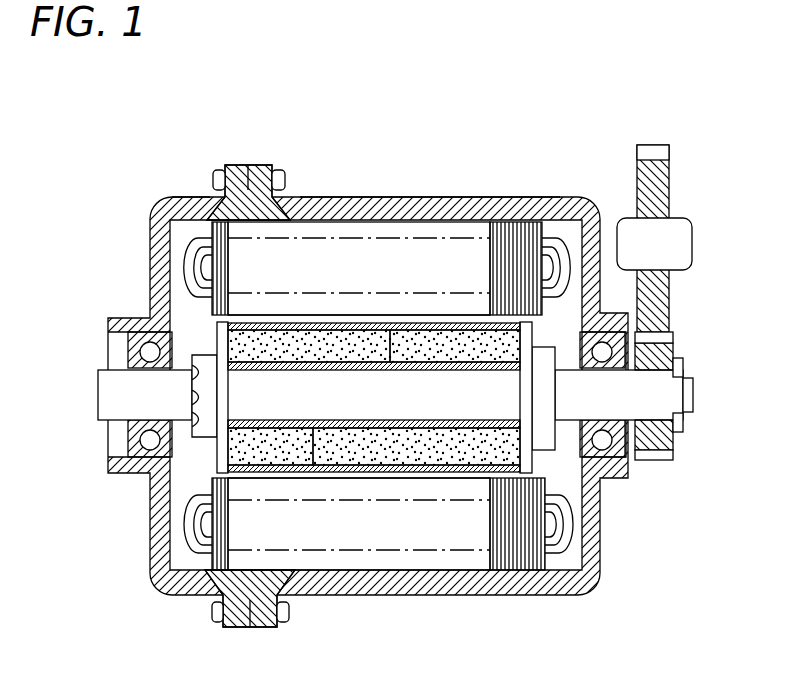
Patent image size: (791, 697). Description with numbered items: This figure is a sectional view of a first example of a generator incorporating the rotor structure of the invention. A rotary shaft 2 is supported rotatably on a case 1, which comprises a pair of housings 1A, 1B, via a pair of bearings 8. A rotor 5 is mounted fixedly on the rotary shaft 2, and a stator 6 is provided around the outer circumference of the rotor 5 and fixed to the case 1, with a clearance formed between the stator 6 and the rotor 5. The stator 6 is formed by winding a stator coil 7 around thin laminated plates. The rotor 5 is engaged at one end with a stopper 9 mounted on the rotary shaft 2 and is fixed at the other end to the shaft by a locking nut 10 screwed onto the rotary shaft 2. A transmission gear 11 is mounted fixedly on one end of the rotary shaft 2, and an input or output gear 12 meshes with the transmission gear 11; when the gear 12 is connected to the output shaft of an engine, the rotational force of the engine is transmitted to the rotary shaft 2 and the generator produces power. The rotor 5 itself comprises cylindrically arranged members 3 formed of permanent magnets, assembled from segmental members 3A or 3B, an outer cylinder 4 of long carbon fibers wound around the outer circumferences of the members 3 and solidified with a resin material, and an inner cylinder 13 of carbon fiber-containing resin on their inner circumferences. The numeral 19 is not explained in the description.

The case 1 is at (384, 194).
The housing 1A is at (440, 205).
The housing 1B is at (195, 210).
The rotary shaft 2 is at (120, 392).
The cylindrically arranged members 3 is at (391, 401).
The segmental member 3A is at (480, 480).
The segmental member 3B is at (313, 350).
The outer cylinder 4 is at (363, 320).
The rotor 5 is at (343, 476).
The stator 6 is at (337, 268).
The stator coil 7 is at (194, 263).
The bearing 8 is at (120, 333).
The stopper 9 is at (612, 330).
The locking nut 10 is at (212, 355).
The transmission gear 11 is at (662, 362).
The input or output gear 12 is at (658, 190).
The inner cylinder 13 is at (392, 330).
The insulating layer 19 is at (460, 318).